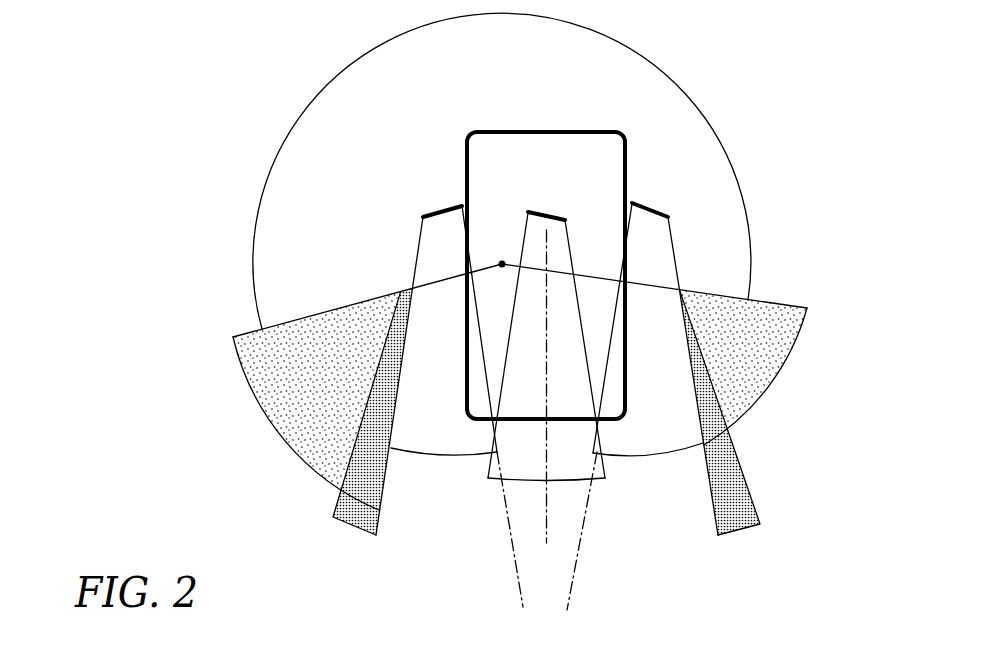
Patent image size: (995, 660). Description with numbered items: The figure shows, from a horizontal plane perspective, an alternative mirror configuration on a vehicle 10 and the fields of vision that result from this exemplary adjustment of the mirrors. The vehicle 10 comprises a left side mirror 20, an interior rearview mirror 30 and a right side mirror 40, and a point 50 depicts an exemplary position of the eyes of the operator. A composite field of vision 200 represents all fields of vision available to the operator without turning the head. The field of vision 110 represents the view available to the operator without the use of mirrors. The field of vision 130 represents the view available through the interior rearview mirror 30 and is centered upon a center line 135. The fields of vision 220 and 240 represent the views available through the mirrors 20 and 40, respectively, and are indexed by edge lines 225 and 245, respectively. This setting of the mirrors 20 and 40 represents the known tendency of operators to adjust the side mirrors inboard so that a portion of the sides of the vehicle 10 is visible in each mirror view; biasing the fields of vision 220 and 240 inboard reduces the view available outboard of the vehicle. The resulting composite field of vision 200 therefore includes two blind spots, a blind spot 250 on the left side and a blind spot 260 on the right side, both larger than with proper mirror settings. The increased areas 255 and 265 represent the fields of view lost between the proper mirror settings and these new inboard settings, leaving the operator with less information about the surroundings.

The vehicle 10 is at (466, 131).
The left side mirror 20 is at (435, 207).
The interior rearview mirror 30 is at (553, 212).
The right side mirror 40 is at (646, 203).
The point 50 is at (502, 258).
The field of vision 110 is at (720, 143).
The field of vision 130 is at (496, 479).
The center line 135 is at (550, 511).
The composite field of vision 200 is at (704, 87).
The field of vision 220 is at (415, 453).
The edge line 225 is at (517, 578).
The field of vision 240 is at (678, 453).
The edge line 245 is at (576, 571).
The blind spot 250 is at (297, 453).
The increased area of the blind spot 255 is at (341, 528).
The blind spot 260 is at (761, 398).
The increased area of the blind spot 265 is at (749, 531).